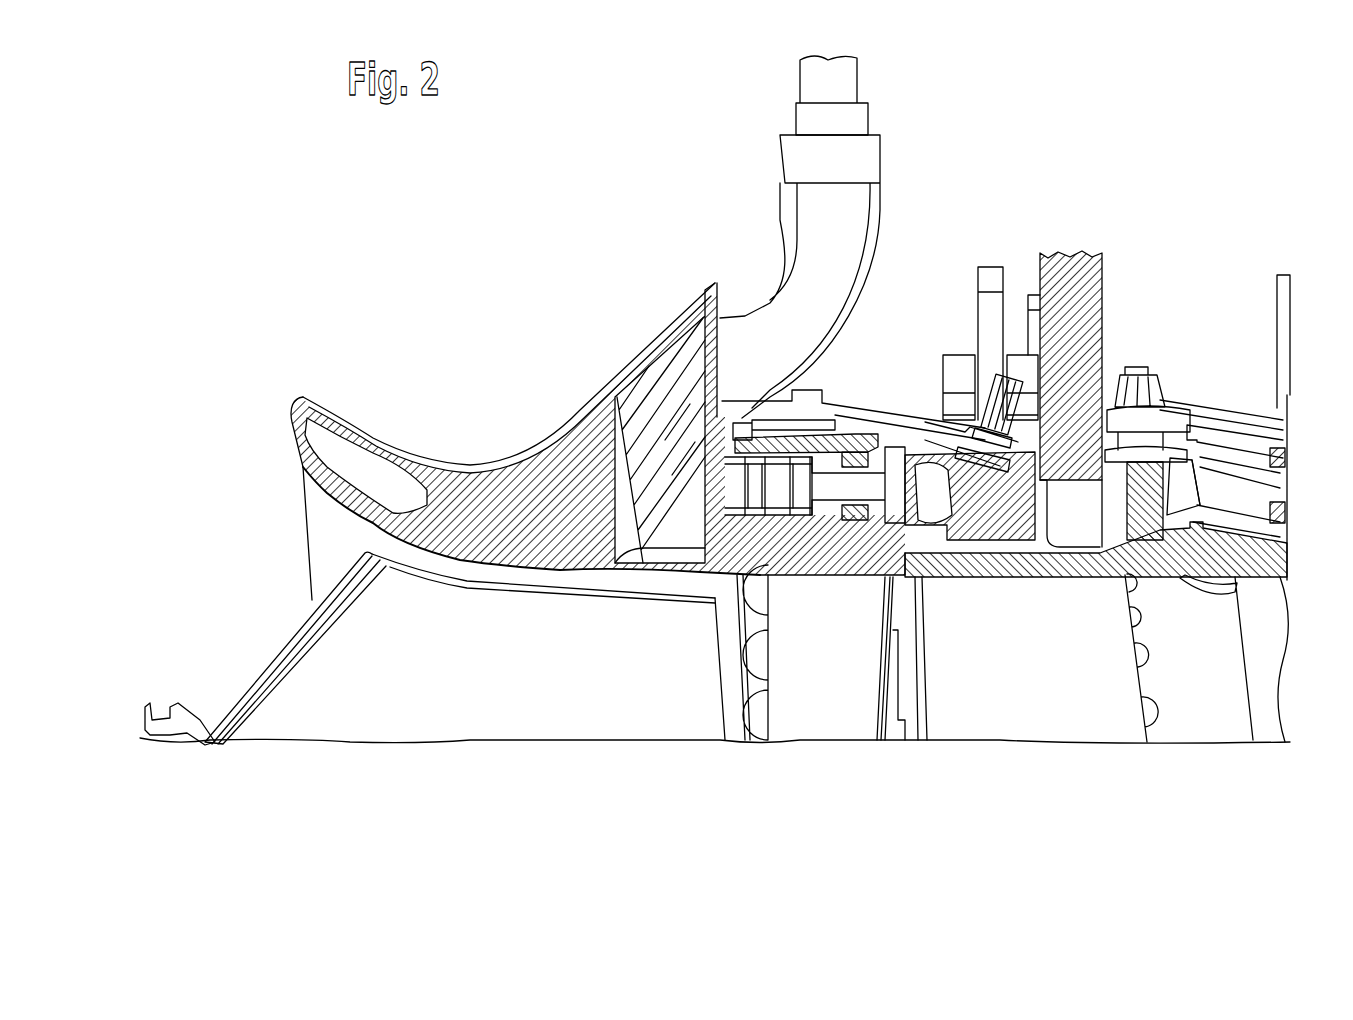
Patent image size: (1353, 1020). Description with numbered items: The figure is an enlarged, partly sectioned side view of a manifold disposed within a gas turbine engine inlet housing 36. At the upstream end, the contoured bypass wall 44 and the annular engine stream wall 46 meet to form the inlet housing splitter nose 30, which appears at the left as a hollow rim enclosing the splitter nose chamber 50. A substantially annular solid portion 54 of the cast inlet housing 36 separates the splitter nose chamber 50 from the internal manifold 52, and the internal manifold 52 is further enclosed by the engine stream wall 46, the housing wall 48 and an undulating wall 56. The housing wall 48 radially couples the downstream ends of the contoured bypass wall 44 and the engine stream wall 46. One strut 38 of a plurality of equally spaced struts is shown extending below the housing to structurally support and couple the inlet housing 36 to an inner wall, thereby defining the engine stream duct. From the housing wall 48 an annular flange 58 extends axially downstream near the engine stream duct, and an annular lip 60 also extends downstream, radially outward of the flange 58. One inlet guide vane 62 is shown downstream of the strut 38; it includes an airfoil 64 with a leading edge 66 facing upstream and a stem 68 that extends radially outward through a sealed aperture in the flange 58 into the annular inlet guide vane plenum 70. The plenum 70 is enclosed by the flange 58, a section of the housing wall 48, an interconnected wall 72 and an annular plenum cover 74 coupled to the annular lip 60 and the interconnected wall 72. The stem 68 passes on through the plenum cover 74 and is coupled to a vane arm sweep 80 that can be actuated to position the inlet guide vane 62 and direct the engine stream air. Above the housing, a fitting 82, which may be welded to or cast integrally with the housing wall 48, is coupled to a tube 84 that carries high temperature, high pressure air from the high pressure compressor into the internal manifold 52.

The inlet housing splitter nose 30 is at (300, 400).
The splitter nose chamber 50 is at (347, 450).
The inlet housing 36 is at (598, 435).
The contoured bypass wall 44 is at (470, 460).
The solid portion 54 is at (582, 440).
The internal manifold 52 is at (672, 373).
The undulating wall 56 is at (690, 313).
The strut 38 is at (443, 677).
The engine stream wall 46 is at (518, 567).
The annular lip 60 is at (703, 467).
The housing wall 48 is at (705, 505).
The inlet guide vane plenum 70 is at (738, 490).
The leading edge 66 is at (775, 500).
The stem 68 is at (797, 510).
The annular flange 58 is at (822, 553).
The inlet guide vane 62 is at (862, 717).
The airfoil 64 is at (921, 658).
The interconnected wall 72 is at (888, 490).
The annular plenum cover 74 is at (858, 445).
The vane arm sweep 80 is at (845, 432).
The fitting 82 is at (880, 207).
The tube 84 is at (855, 78).